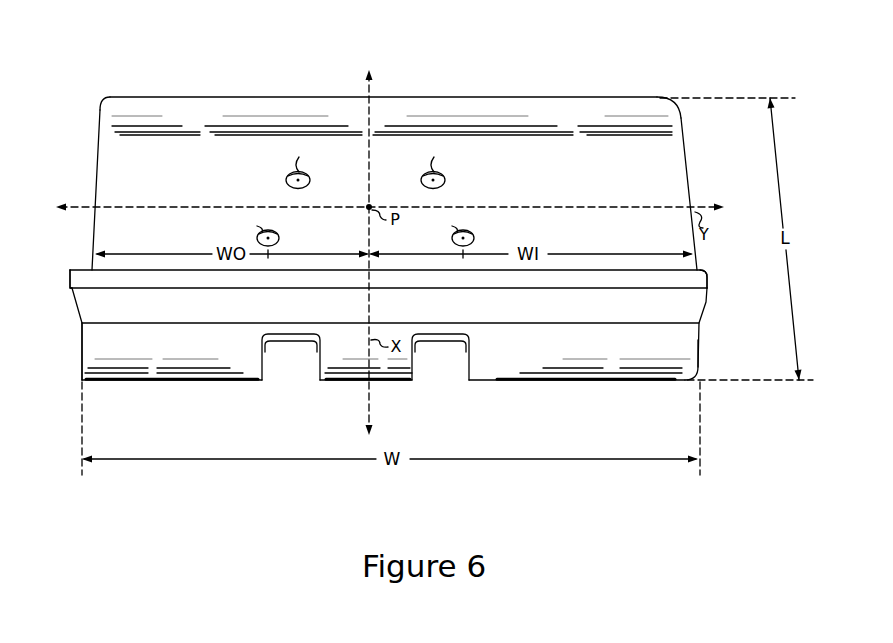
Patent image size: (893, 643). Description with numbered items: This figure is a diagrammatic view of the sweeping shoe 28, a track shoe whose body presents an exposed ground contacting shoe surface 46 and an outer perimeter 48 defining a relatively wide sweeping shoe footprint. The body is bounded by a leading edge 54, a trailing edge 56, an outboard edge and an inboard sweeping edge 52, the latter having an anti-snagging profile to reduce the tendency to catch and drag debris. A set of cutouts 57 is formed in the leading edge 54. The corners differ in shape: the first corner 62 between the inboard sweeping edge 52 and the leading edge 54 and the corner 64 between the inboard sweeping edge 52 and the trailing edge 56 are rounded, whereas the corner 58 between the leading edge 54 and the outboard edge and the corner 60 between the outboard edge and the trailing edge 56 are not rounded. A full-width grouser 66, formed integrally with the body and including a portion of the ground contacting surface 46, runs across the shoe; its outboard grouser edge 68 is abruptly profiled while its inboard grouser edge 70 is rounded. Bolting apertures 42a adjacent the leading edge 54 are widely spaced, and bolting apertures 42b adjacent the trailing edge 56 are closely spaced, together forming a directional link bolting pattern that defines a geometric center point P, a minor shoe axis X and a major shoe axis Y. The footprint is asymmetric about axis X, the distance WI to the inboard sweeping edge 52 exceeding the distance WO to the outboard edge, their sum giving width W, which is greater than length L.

The sweeping shoe 28 is at (133, 70).
The corner 60 is at (90, 98).
The trailing edge 56 is at (203, 97).
The corner 64 is at (685, 103).
The inboard sweeping edge 52 is at (682, 143).
The ground contacting shoe surface 46 is at (658, 190).
The bolting apertures 42b is at (287, 178).
The bolting apertures 42a is at (279, 236).
The outboard grouser edge 68 is at (70, 278).
The inboard grouser edge 70 is at (705, 283).
The grouser 66 is at (625, 303).
The corner 58 is at (68, 380).
The first corner 62 is at (708, 372).
The leading edge 54 is at (165, 384).
The cutouts 57 is at (318, 372).
The outer perimeter 48 is at (516, 394).